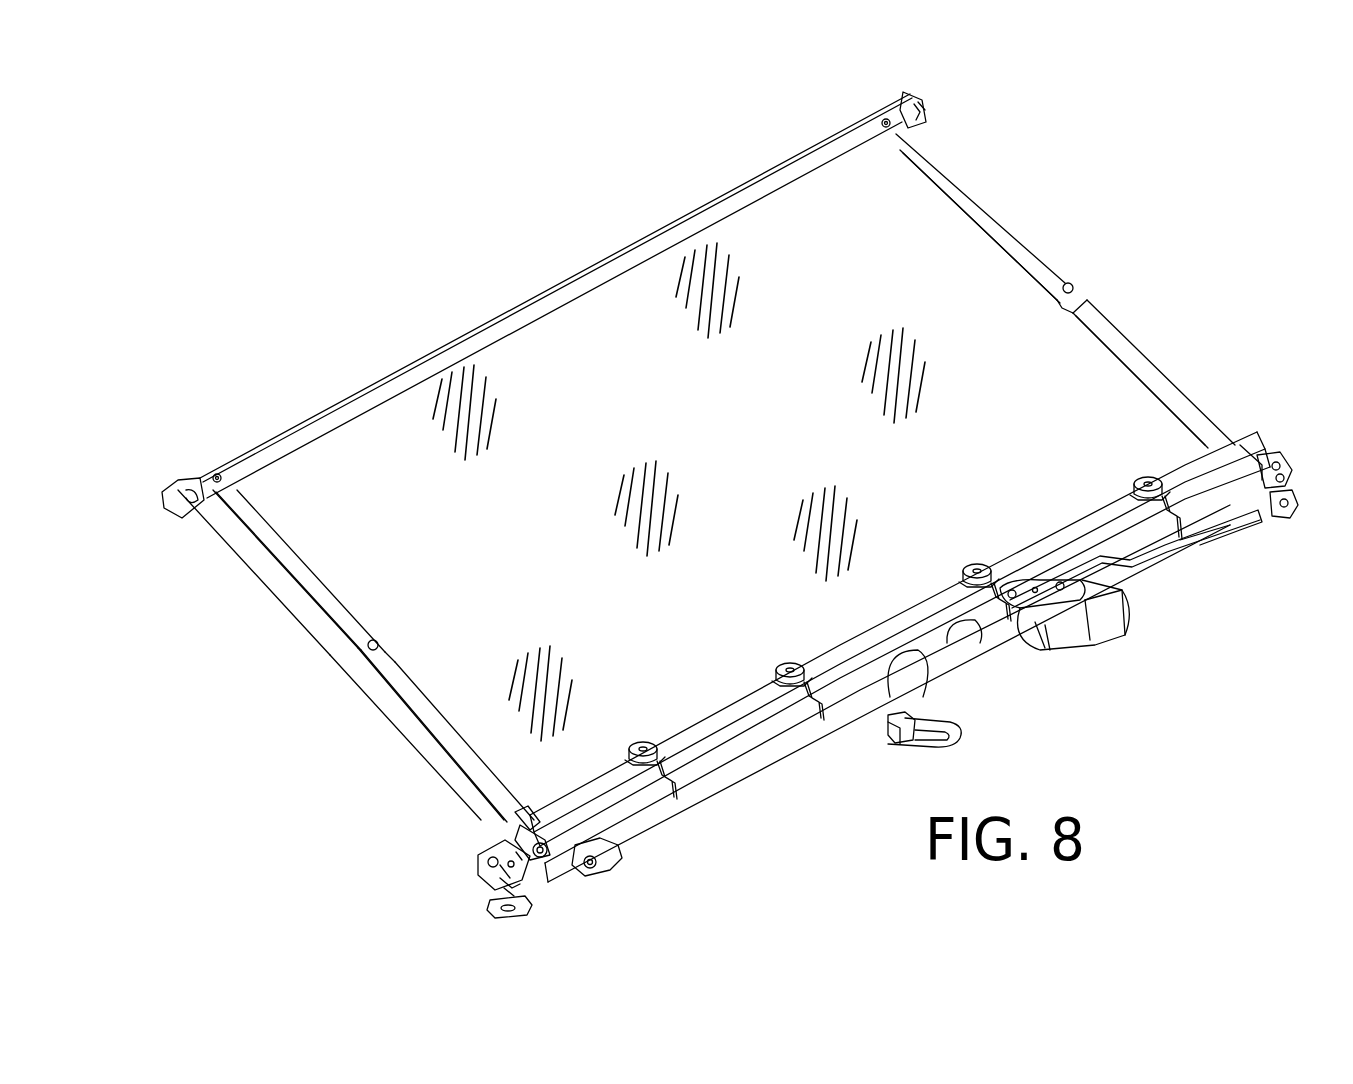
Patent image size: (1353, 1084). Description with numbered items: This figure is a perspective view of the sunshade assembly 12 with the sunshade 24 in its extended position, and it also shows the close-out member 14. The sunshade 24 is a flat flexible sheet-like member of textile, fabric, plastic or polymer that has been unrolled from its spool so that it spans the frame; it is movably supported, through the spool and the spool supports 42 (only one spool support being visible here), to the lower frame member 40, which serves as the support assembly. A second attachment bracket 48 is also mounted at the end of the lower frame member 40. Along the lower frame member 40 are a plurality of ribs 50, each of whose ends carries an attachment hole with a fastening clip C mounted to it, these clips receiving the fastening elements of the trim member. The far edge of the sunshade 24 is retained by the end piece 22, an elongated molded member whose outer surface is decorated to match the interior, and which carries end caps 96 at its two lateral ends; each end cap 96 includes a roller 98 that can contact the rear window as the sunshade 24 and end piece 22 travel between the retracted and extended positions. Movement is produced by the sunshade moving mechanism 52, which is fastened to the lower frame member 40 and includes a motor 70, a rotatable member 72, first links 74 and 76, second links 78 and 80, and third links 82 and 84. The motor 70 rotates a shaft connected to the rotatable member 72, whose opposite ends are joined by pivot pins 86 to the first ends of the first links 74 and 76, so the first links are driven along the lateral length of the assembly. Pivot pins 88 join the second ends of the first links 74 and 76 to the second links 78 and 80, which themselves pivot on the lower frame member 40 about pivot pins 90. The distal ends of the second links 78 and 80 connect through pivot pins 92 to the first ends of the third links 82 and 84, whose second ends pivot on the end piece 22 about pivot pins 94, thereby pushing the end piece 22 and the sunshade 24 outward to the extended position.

The sunshade assembly 12 is at (452, 240).
The close-out member 14 is at (712, 762).
The end piece 22 is at (355, 398).
The sunshade 24 is at (522, 370).
The lower frame member 40 is at (490, 889).
The spool support 42 is at (478, 868).
The second attachment bracket 48 is at (532, 908).
The rib 50 is at (815, 665).
The sunshade moving mechanism 52 is at (1098, 672).
The motor 70 is at (1103, 618).
The rotatable member 72 is at (1010, 588).
The first link 74 is at (1225, 532).
The first link 76 is at (795, 762).
The second link 78 is at (1135, 360).
The second link 80 is at (437, 720).
The third link 82 is at (1005, 232).
The third link 84 is at (306, 578).
The pivot pin 86 is at (1033, 592).
The pivot pin 88 is at (612, 860).
The pivot pin 90 is at (533, 810).
The pivot pin 92 is at (1075, 286).
The pivot pin 94 is at (882, 120).
The end cap 96 is at (926, 104).
The roller 98 is at (928, 112).
The fastening clip C is at (660, 742).